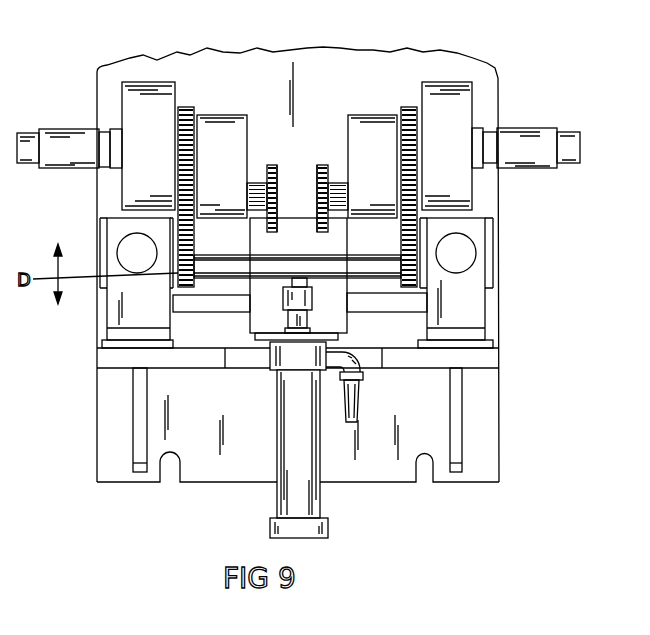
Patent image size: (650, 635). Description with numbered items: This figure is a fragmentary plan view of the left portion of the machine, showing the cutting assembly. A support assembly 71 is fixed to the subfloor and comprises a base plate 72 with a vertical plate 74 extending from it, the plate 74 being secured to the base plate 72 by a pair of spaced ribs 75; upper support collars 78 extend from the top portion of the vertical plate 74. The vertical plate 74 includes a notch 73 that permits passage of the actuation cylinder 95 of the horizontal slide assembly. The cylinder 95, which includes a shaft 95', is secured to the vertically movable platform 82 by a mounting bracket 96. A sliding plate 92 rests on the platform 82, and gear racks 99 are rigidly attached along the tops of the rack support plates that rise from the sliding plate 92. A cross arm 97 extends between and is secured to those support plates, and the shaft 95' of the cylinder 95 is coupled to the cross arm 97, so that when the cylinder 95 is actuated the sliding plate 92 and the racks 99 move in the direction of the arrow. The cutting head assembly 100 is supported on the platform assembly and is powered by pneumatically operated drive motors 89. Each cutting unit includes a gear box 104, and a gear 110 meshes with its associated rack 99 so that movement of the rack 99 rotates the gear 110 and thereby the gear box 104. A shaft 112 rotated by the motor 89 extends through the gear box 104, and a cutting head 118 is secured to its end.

The support assembly 71 is at (116, 372).
The base plate 72 is at (495, 433).
The notch 73 is at (255, 365).
The vertical plate 74 is at (180, 368).
The spaced ribs 75 is at (450, 398).
The upper support collars 78 is at (110, 318).
The platform 82 is at (402, 312).
The drive motors 89 is at (68, 137).
The sliding plate 92 is at (335, 101).
The cylinder 95 is at (274, 454).
The shaft 95' is at (313, 305).
The mounting bracket 96 is at (338, 337).
The cross arm 97 is at (245, 267).
The gear racks 99 is at (194, 243).
The cutting head assembly 100 is at (146, 92).
The gear box 104 is at (163, 161).
The gear 110 is at (182, 103).
The shaft 112 is at (256, 182).
The cutting head 118 is at (317, 200).